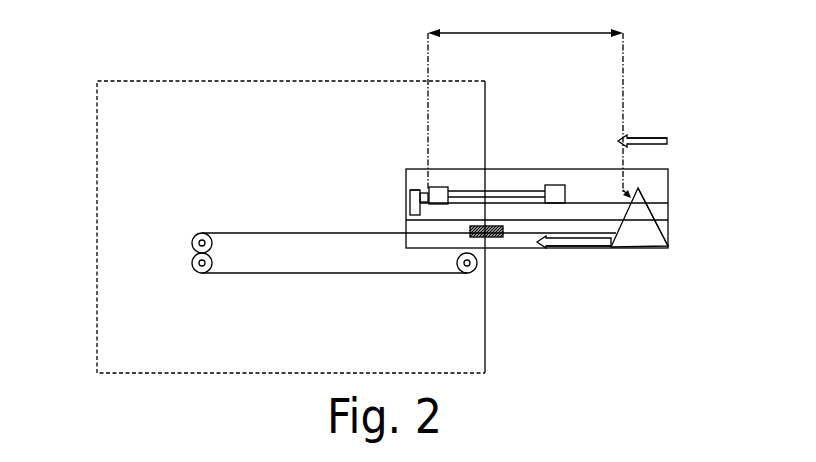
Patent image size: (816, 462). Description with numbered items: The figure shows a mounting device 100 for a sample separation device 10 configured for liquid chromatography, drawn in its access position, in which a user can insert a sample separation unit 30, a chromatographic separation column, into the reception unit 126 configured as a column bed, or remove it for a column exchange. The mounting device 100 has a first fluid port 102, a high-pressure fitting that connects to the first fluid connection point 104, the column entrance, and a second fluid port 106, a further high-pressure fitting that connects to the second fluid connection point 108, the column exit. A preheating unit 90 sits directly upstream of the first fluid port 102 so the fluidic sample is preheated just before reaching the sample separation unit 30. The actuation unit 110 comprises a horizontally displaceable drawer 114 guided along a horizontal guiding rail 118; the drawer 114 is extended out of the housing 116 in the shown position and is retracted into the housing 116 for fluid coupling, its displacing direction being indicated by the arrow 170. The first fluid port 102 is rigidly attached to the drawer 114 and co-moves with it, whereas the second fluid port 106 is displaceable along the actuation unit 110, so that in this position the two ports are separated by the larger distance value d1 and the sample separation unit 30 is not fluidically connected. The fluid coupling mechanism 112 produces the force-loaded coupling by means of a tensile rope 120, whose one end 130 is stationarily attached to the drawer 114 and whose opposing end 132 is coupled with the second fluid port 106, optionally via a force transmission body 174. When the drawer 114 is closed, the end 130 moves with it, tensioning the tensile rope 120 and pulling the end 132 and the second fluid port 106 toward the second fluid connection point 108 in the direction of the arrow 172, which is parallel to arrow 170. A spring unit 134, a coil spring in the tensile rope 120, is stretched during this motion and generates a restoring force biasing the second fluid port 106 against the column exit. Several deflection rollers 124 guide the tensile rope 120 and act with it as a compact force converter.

The sample separation device 10 is at (93, 139).
The sample separation unit 30 is at (501, 176).
The preheating unit 90 is at (408, 197).
The mounting device 100 is at (659, 52).
The first fluid port 102 is at (424, 192).
The first fluid connection point 104 is at (440, 186).
The second fluid port 106 is at (662, 131).
The second fluid connection point 108 is at (552, 187).
The actuation unit 110 is at (674, 183).
The fluid coupling mechanism 112 is at (176, 249).
The drawer 114 is at (580, 168).
The housing 116 is at (487, 365).
The guiding rail 118 is at (407, 207).
The tensile rope 120 is at (191, 257).
The deflection rollers 124 is at (200, 232).
The reception unit 126 is at (522, 212).
The end of the tensile rope 130 is at (476, 252).
The other end of the tensile rope 132 is at (617, 232).
The spring unit 134 is at (500, 239).
The arrow 170 is at (638, 136).
The arrow 172 is at (572, 246).
The force transmission body 174 is at (650, 240).
The distance value d1 is at (529, 102).